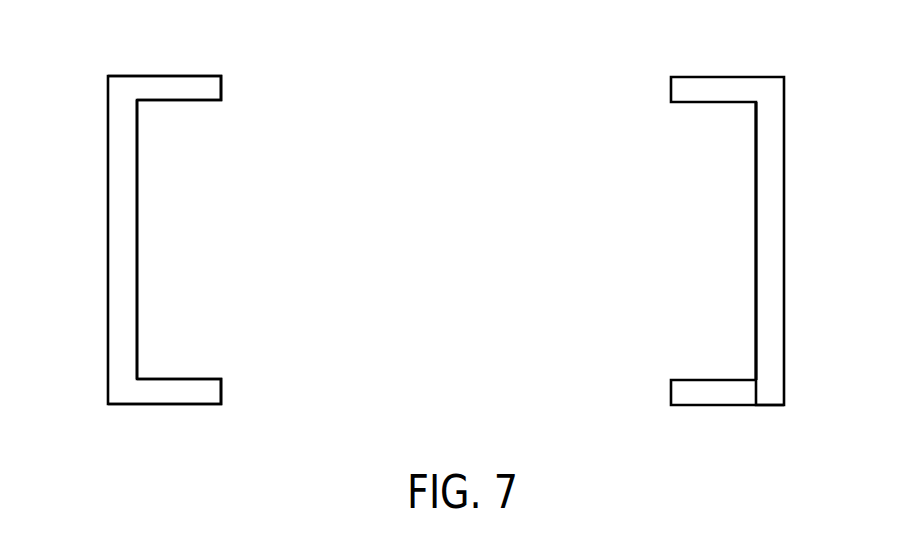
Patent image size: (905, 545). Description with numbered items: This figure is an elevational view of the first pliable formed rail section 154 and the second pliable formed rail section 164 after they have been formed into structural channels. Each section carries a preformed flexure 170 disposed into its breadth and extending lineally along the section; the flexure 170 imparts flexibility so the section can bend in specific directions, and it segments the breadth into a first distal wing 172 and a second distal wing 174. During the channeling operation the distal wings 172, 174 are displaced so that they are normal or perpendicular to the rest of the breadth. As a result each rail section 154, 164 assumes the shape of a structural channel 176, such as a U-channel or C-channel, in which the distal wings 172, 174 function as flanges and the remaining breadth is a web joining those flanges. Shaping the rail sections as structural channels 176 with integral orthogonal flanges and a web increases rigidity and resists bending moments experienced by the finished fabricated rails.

The first pliable formed rail section 154 is at (137, 251).
The second pliable formed rail section 164 is at (755, 238).
The flexure 170 is at (139, 102).
The first distal wing 172 is at (180, 85).
The second distal wing 174 is at (187, 393).
The structural channel 176 is at (250, 265).